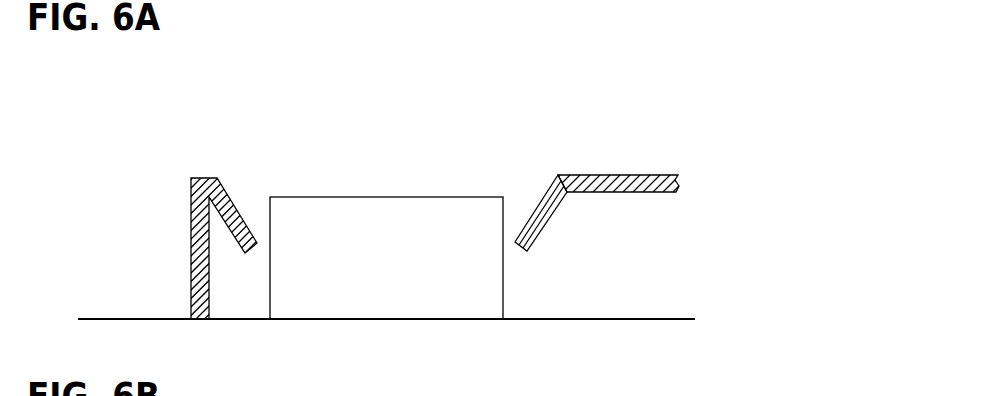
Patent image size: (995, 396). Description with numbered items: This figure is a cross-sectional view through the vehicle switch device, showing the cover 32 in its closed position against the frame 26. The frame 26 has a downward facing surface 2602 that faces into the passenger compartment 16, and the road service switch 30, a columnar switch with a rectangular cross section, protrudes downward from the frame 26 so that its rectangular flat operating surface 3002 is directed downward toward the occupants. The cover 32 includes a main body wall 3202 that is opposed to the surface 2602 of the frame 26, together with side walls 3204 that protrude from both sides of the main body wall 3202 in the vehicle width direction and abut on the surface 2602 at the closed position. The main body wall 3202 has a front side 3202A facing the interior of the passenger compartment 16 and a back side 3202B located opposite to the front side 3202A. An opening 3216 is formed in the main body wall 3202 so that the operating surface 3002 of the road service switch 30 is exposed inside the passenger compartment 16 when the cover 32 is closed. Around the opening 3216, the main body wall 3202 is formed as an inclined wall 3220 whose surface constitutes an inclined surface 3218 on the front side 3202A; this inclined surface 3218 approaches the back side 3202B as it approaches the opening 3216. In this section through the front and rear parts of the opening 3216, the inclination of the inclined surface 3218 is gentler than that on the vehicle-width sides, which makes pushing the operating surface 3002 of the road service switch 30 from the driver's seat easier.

The passenger compartment 16 is at (256, 57).
The frame 26 is at (403, 351).
The surface 2602 is at (610, 318).
The road service switch 30 is at (386, 206).
The operating surface 3002 is at (386, 206).
The opening 3216 is at (422, 279).
The side wall 3204 is at (190, 239).
The cover 32 is at (587, 211).
The main body wall 3202 is at (587, 211).
The front side 3202A is at (612, 182).
The back side 3202B is at (615, 192).
The inclined surface 3218 is at (529, 232).
The inclined wall 3220 is at (552, 228).